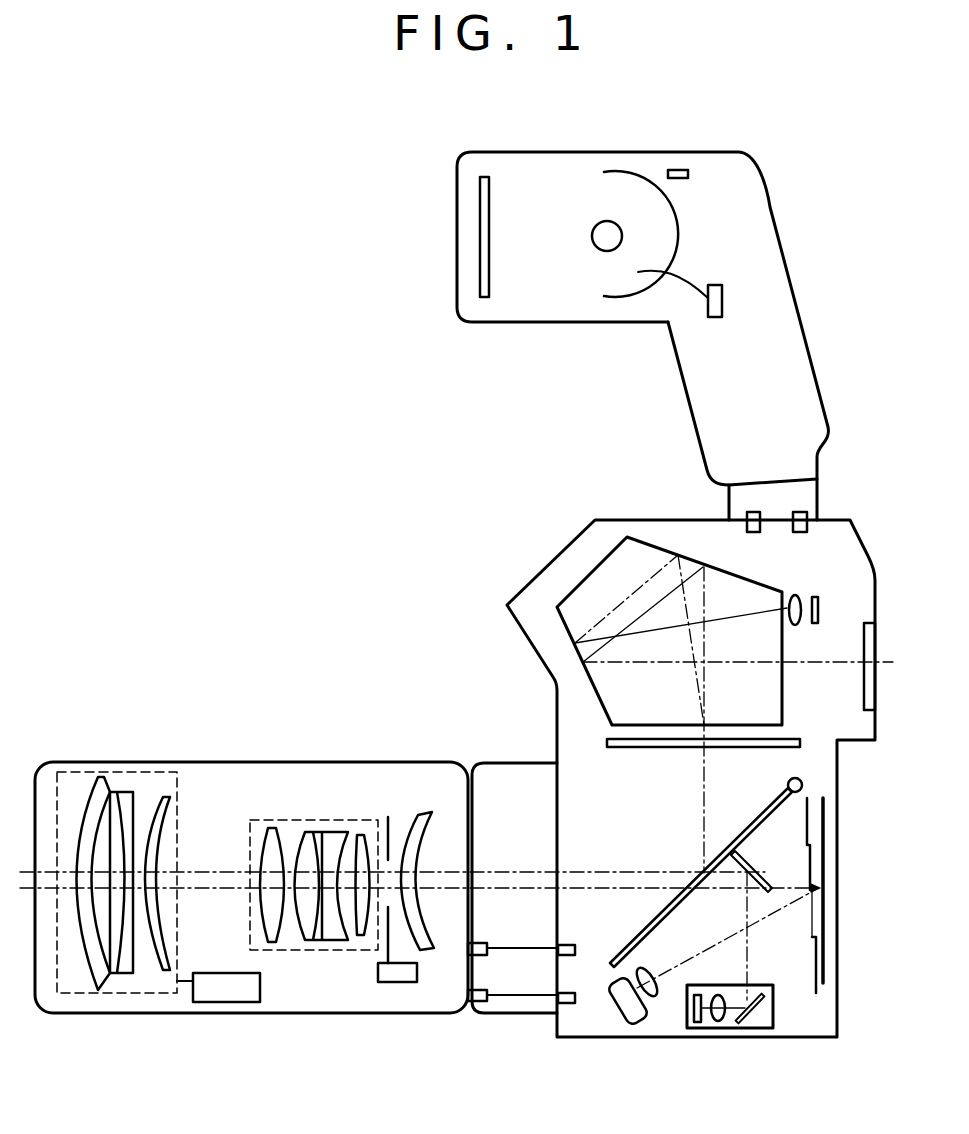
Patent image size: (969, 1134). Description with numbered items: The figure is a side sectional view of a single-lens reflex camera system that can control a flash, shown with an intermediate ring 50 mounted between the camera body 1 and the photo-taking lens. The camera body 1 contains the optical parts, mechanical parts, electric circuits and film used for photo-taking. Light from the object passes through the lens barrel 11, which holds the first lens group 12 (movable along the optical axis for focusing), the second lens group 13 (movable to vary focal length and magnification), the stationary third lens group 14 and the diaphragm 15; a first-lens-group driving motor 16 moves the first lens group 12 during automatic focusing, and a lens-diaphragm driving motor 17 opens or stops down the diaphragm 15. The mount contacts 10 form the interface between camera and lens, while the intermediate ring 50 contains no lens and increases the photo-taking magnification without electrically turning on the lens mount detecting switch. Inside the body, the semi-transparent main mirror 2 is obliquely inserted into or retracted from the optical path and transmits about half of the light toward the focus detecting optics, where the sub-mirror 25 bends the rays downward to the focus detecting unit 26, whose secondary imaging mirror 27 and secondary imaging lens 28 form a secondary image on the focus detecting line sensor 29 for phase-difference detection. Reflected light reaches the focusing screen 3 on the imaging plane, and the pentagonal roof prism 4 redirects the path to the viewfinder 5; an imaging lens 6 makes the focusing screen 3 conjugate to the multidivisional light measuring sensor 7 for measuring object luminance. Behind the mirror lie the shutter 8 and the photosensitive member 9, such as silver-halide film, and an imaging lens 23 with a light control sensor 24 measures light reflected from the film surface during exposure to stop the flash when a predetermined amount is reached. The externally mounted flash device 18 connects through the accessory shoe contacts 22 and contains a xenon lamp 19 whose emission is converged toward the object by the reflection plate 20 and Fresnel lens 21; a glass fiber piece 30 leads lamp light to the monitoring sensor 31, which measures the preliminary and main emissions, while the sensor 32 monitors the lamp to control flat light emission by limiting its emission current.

The camera body 1 is at (530, 603).
The main mirror 2 is at (780, 805).
The focusing screen 3 is at (800, 742).
The pentagonal roof prism 4 is at (605, 580).
The viewfinder 5 is at (872, 632).
The imaging lens 6 is at (797, 600).
The multidivisional light measuring sensor 7 is at (818, 606).
The shutter 8 is at (818, 990).
The photosensitive member 9 is at (827, 953).
The mount contacts 10 is at (575, 950).
The lens barrel 11 is at (48, 777).
The first lens group 12 is at (137, 770).
The second lens group 13 is at (320, 820).
The third lens group 14 is at (420, 810).
The diaphragm 15 is at (388, 830).
The first-lens-group driving motor 16 is at (232, 997).
The lens-diaphragm driving motor 17 is at (400, 975).
The flash device 18 is at (750, 190).
The xenon lamp 19 is at (595, 243).
The reflection plate 20 is at (632, 297).
The Fresnel lens 21 is at (480, 237).
The accessory shoe contacts 22 is at (755, 514).
The imaging lens 23 is at (652, 990).
The light control sensor 24 is at (627, 1010).
The sub-mirror 25 is at (763, 872).
The focus detecting unit 26 is at (773, 1005).
The secondary imaging mirror 27 is at (750, 1010).
The secondary imaging lens 28 is at (718, 1022).
The focus detecting line sensor 29 is at (697, 1020).
The glass fiber piece 30 is at (673, 275).
The monitoring sensor 31 is at (722, 300).
The sensor 32 is at (677, 170).
The intermediate ring 50 is at (513, 985).